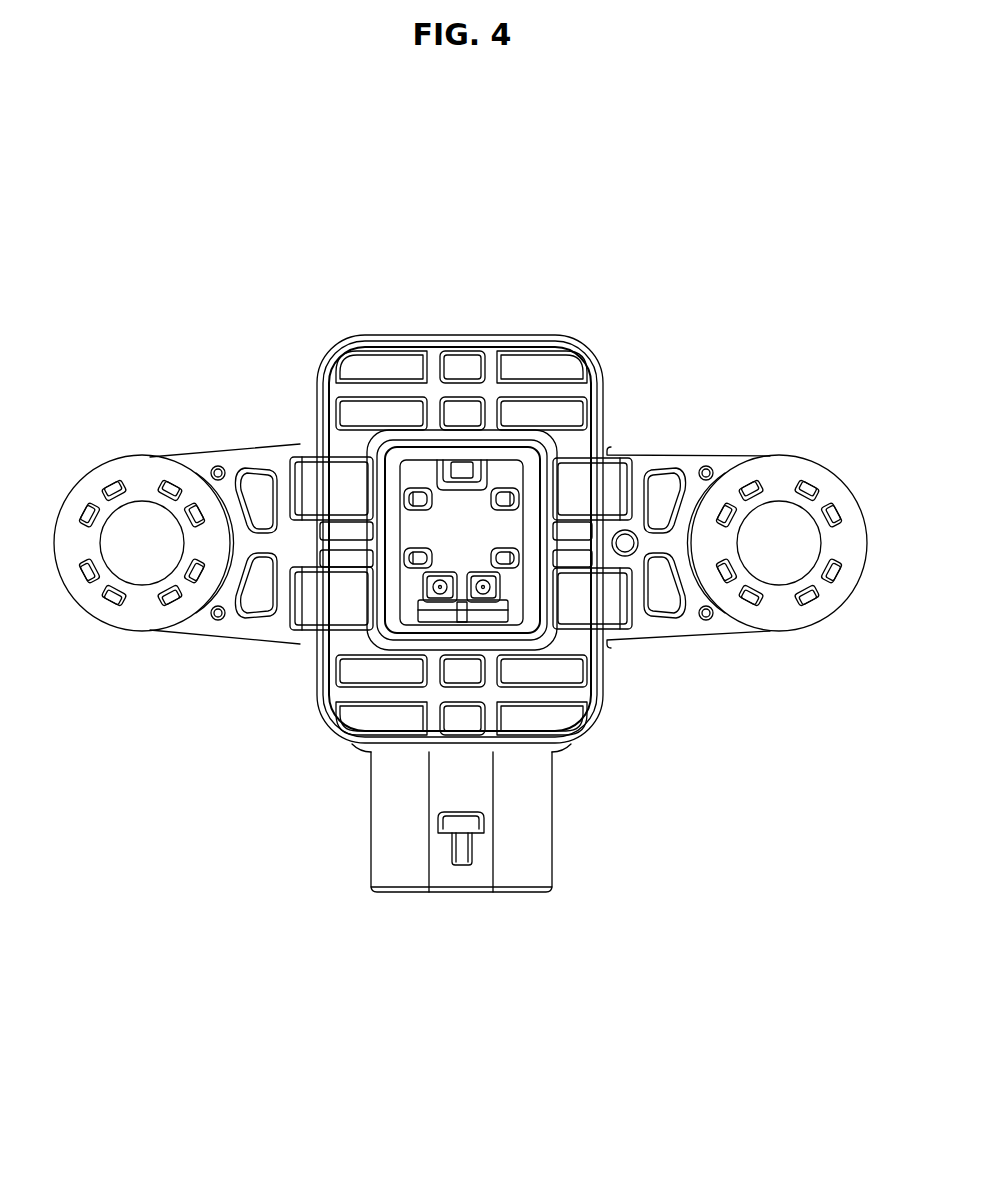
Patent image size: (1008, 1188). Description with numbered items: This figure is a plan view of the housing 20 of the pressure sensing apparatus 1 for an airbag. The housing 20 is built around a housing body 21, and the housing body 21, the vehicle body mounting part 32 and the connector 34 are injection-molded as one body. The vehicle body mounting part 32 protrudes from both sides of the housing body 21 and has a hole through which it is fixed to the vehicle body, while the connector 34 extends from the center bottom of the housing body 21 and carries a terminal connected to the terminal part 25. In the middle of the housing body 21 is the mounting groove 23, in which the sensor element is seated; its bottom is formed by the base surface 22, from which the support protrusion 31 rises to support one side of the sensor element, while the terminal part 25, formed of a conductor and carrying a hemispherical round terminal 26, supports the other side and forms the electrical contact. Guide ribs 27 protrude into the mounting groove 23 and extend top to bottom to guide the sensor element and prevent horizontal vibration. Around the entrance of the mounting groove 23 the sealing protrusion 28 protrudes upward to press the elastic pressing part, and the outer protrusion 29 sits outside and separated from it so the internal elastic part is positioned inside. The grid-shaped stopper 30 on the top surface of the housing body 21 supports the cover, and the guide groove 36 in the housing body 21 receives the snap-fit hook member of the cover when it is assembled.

The pressure sensing apparatus 1 is at (577, 264).
The housing 20 is at (597, 343).
The housing body 21 is at (525, 338).
The base surface 22 is at (430, 522).
The mounting groove 23 is at (420, 481).
The terminal part 25 is at (418, 577).
The round terminal 26 is at (440, 590).
The guide rib 27 is at (505, 497).
The sealing protrusion 28 is at (543, 635).
The outer protrusion 29 is at (513, 630).
The stopper 30 is at (515, 695).
The support protrusion 31 is at (460, 497).
The vehicle body mounting part 32 is at (805, 457).
The connector 34 is at (396, 910).
The guide groove 36 is at (633, 620).